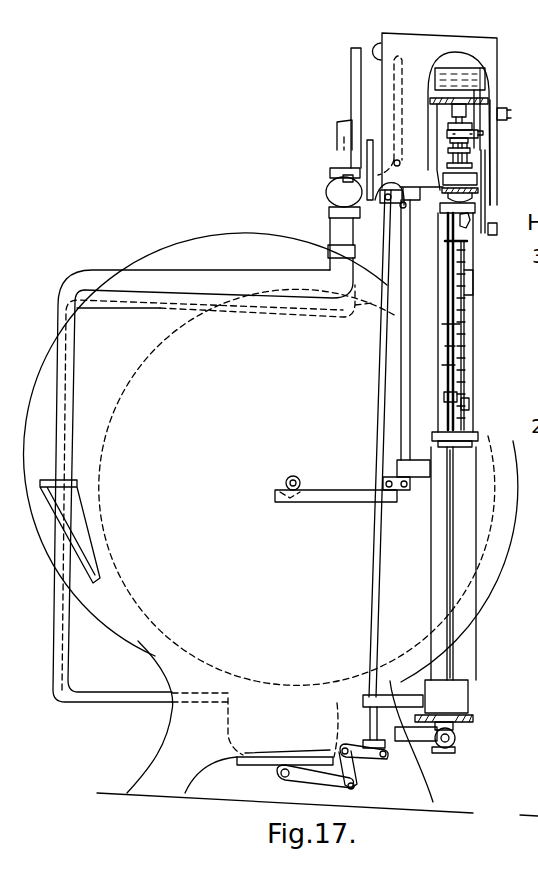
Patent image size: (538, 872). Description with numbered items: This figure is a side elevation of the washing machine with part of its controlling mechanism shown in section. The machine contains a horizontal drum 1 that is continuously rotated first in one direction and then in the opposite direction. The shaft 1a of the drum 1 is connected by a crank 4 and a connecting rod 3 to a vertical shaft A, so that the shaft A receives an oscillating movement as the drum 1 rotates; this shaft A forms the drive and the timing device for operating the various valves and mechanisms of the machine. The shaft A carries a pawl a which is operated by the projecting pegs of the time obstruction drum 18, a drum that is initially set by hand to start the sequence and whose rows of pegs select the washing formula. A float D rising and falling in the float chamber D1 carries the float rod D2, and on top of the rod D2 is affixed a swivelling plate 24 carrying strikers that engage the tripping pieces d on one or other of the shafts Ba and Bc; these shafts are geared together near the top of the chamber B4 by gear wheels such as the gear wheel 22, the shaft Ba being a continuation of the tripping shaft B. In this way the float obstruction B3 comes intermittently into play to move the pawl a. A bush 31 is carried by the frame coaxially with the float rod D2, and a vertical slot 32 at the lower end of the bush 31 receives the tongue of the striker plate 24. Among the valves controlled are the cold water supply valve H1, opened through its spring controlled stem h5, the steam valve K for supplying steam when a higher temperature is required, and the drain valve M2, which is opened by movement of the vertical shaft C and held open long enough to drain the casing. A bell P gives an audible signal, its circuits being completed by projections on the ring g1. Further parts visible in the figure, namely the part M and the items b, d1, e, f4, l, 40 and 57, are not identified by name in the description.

The horizontal drum 1 is at (188, 650).
The shaft of the drum 1a is at (295, 477).
The connecting rod 3 is at (325, 494).
The crank 4 is at (287, 486).
The time obstruction drum 18 is at (450, 140).
The gear wheel 22 is at (448, 246).
The swivelling plate 24 is at (468, 407).
The bush 31 is at (450, 213).
The vertical slot 32 is at (475, 250).
The latch 40 is at (468, 224).
The knob 57 is at (502, 104).
The vertical shaft A is at (410, 370).
The tripping shaft B is at (448, 224).
The float obstruction B3 is at (445, 160).
The chamber B4 is at (473, 281).
The shaft Bc is at (458, 326).
The shaft Ba is at (434, 375).
The vertical shaft C is at (370, 606).
The float D is at (457, 694).
The float chamber D1 is at (466, 632).
The float rod D2 is at (447, 537).
The cold water supply valve H1 is at (330, 192).
The steam valve K is at (340, 150).
The motor housing M is at (439, 68).
The drain valve M2 is at (235, 760).
The bell P is at (354, 93).
The pawl a is at (427, 352).
The rod b is at (488, 336).
The tripping pieces d is at (456, 353).
The cross head d1 is at (443, 424).
The arm e is at (450, 178).
The bracket f4 is at (445, 188).
The ring g1 is at (472, 143).
The spring controlled stem h5 is at (383, 207).
The rod l is at (483, 201).